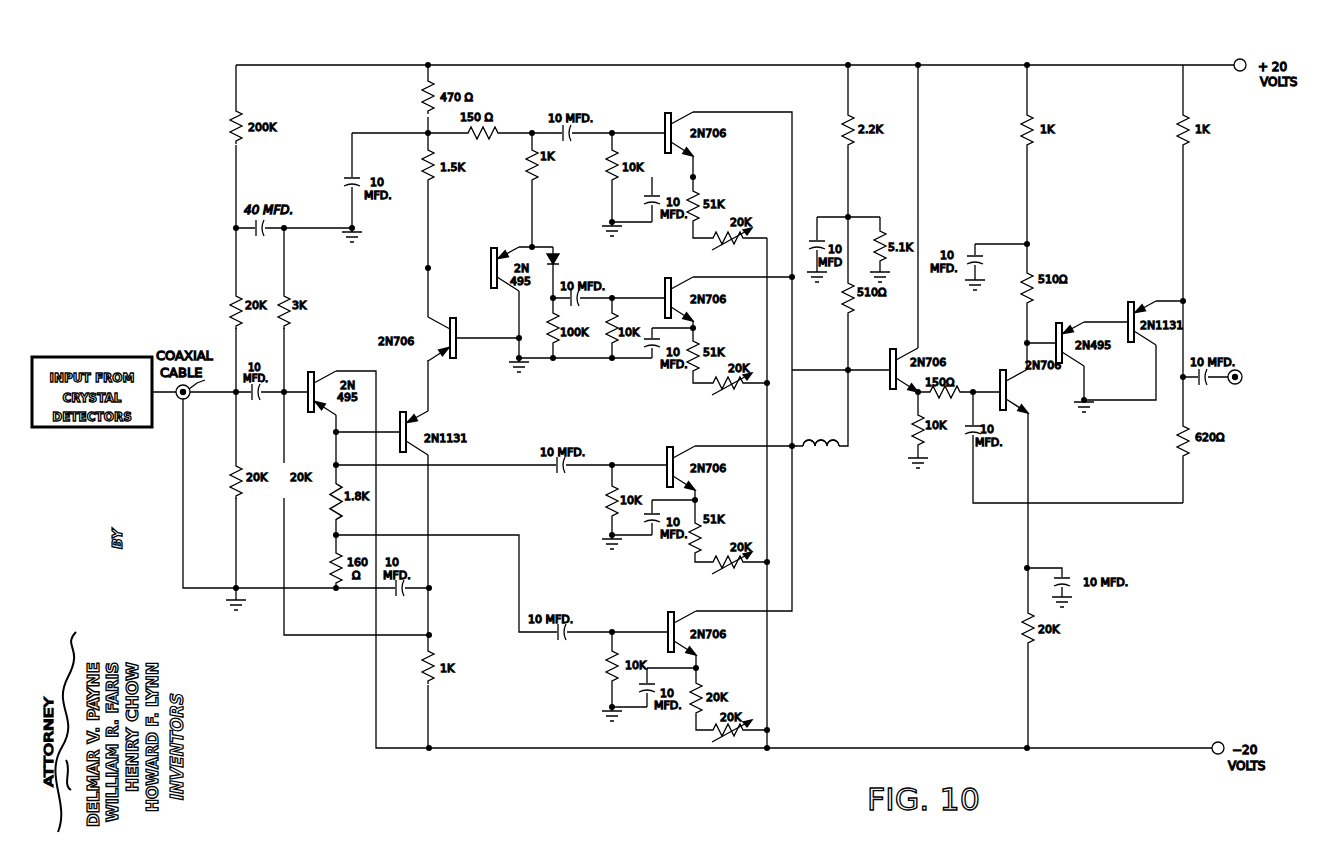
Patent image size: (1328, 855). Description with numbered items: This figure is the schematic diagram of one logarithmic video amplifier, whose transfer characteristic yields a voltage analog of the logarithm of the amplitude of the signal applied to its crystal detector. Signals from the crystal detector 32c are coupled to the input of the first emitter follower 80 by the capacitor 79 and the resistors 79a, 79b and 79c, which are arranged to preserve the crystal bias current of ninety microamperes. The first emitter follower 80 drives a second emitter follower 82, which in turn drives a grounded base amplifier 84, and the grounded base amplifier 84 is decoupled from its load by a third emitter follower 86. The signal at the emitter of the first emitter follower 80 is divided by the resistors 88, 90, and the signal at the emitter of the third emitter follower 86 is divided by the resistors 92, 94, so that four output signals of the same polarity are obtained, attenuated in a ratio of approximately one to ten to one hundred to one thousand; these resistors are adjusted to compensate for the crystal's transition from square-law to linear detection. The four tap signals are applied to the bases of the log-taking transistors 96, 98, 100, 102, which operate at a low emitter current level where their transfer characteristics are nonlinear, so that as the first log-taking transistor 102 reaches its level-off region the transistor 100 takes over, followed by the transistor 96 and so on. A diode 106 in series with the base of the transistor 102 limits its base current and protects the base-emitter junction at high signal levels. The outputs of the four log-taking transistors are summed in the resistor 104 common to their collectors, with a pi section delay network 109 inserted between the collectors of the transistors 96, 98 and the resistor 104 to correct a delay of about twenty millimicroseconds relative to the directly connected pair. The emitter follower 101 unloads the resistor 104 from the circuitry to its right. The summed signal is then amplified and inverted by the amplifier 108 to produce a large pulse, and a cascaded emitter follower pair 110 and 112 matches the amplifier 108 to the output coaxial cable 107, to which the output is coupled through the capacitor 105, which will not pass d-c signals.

The crystal detector 32c is at (112, 352).
The resistor 79a is at (233, 123).
The resistor 79b is at (234, 313).
The resistor 79c is at (234, 478).
The capacitor 79 is at (259, 400).
The first emitter follower 80 is at (312, 370).
The second emitter follower 82 is at (400, 411).
The grounded base amplifier 84 is at (457, 332).
The third emitter follower 86 is at (490, 257).
The resistor 88 is at (334, 492).
The resistor 90 is at (334, 557).
The resistor 92 is at (534, 180).
The resistor 94 is at (507, 128).
The log-taking transistor 96 is at (666, 459).
The log-taking transistor 98 is at (668, 624).
The log-taking transistor 100 is at (664, 123).
The emitter follower 101 is at (888, 378).
The first log-taking transistor 102 is at (666, 293).
The resistor 104 is at (855, 299).
The capacitor 105 is at (1218, 386).
The diode 106 is at (557, 256).
The output coaxial cable 107 is at (1242, 368).
The amplifier 108 is at (1011, 375).
The pi section delay network 109 is at (832, 458).
The emitter follower 110 is at (1060, 320).
The emitter follower 112 is at (1128, 306).